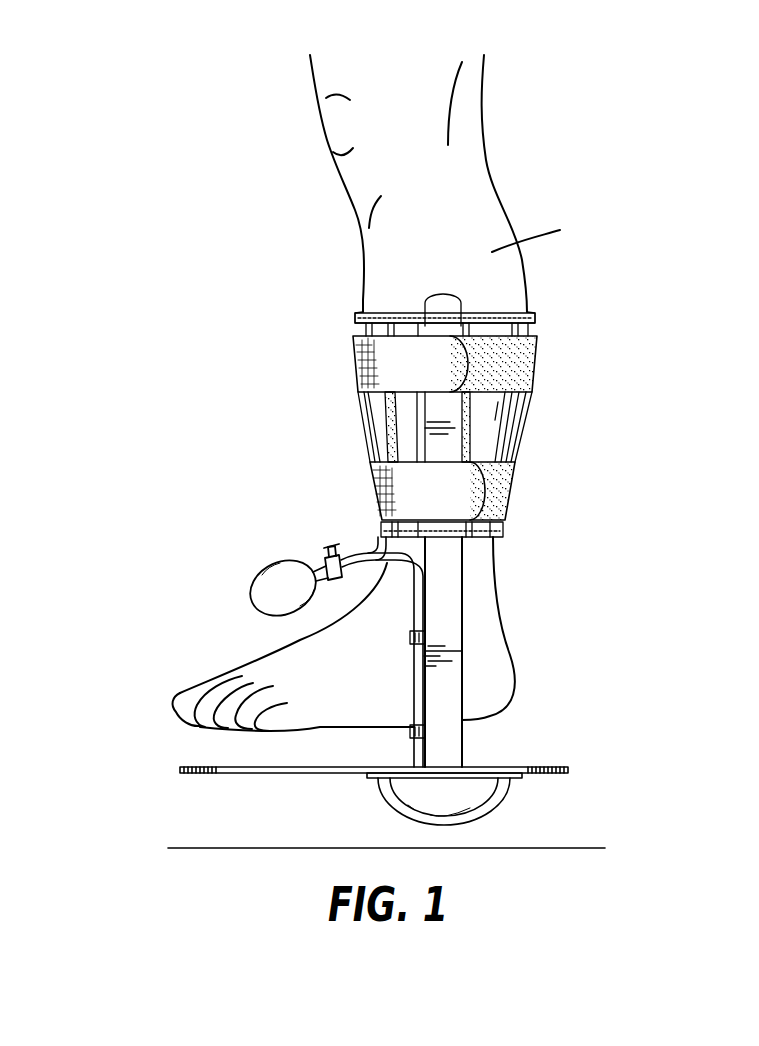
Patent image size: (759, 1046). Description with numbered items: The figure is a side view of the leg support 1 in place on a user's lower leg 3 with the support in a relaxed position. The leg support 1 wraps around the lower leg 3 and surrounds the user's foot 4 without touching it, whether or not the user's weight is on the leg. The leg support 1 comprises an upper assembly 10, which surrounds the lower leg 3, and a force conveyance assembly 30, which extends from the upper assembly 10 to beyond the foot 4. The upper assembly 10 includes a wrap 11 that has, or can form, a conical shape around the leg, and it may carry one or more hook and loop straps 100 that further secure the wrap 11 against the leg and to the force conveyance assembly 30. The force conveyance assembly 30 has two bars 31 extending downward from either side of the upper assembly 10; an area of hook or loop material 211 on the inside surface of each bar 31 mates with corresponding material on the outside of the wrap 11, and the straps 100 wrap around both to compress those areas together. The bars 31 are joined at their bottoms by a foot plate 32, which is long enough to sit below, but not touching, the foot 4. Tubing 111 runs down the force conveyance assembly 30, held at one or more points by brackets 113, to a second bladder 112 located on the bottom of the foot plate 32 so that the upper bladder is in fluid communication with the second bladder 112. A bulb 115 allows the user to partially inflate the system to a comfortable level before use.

The leg support 1 is at (231, 355).
The lower leg 3 is at (493, 253).
The foot 4 is at (298, 662).
The upper assembly 10 is at (637, 262).
The wrap 11 is at (512, 412).
The hook or loop material 211 is at (428, 432).
The hook and loop straps 100 is at (380, 357).
The bulb 115 is at (255, 575).
The tubing 111 is at (414, 683).
The bars 31 is at (448, 570).
The brackets 113 is at (425, 637).
The force conveyance assembly 30 is at (481, 651).
The foot plate 32 is at (227, 773).
The second bladder 112 is at (462, 797).